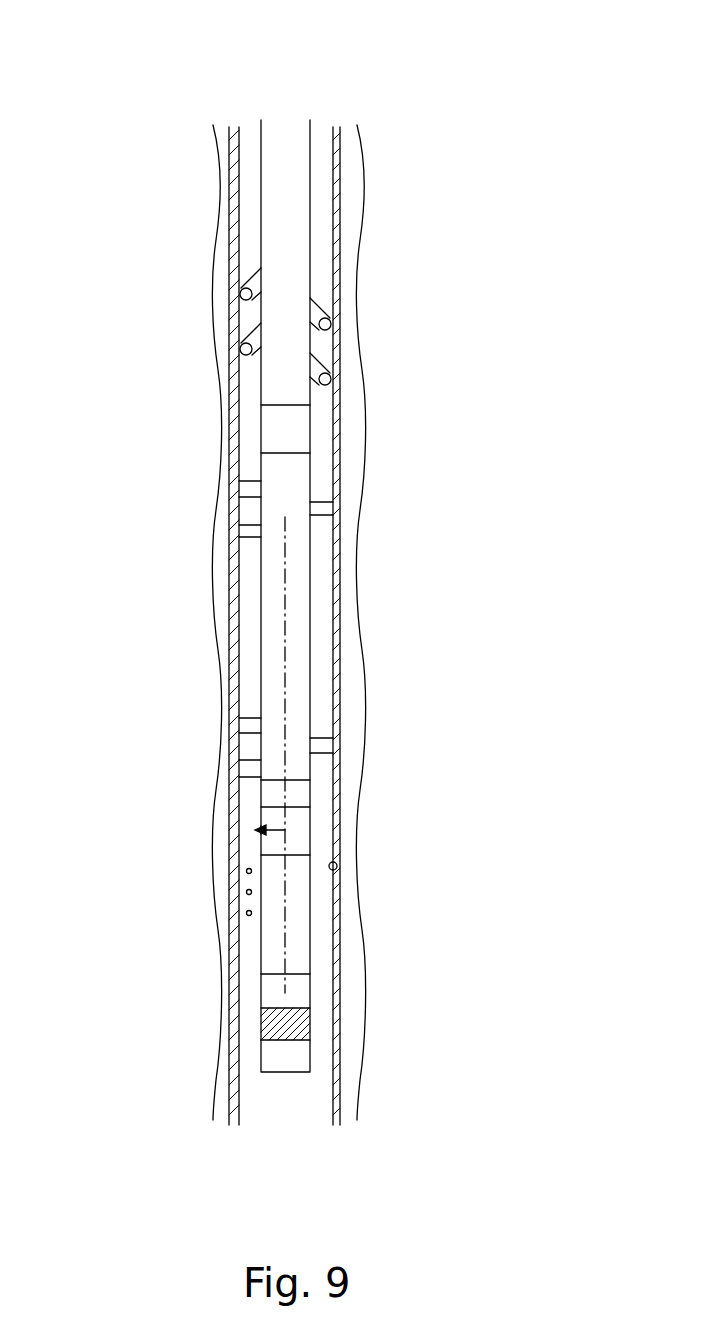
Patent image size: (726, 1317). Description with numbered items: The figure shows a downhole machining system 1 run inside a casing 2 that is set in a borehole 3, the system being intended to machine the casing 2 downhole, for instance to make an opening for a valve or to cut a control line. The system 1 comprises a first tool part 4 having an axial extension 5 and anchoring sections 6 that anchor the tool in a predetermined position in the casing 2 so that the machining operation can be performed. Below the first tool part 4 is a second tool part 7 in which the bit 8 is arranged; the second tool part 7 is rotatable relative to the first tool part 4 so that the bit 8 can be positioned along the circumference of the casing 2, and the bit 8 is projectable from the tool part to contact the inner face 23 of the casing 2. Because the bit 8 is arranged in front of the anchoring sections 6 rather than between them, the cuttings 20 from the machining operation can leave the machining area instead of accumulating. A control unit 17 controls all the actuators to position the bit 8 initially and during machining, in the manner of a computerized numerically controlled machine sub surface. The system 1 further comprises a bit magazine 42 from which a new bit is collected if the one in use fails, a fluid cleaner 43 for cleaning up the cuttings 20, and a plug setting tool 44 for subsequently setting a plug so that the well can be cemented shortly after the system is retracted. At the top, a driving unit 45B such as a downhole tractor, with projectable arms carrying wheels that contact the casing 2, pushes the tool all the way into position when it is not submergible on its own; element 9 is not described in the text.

The downhole machining system 1 is at (133, 86).
The casing 2 is at (340, 181).
The borehole 3 is at (347, 250).
The first tool part 4 is at (294, 598).
The axial extension 5 is at (287, 560).
The anchoring section 6 is at (250, 481).
The second tool part 7 is at (300, 822).
The bit 8 is at (256, 828).
The opening 9 is at (264, 834).
The control unit 17 is at (292, 437).
The cuttings 20 is at (247, 915).
The inner face 23 is at (337, 870).
The bit magazine 42 is at (300, 793).
The fluid cleaner 43 is at (300, 948).
The plug setting tool 44 is at (298, 1055).
The driving unit 45B is at (293, 345).